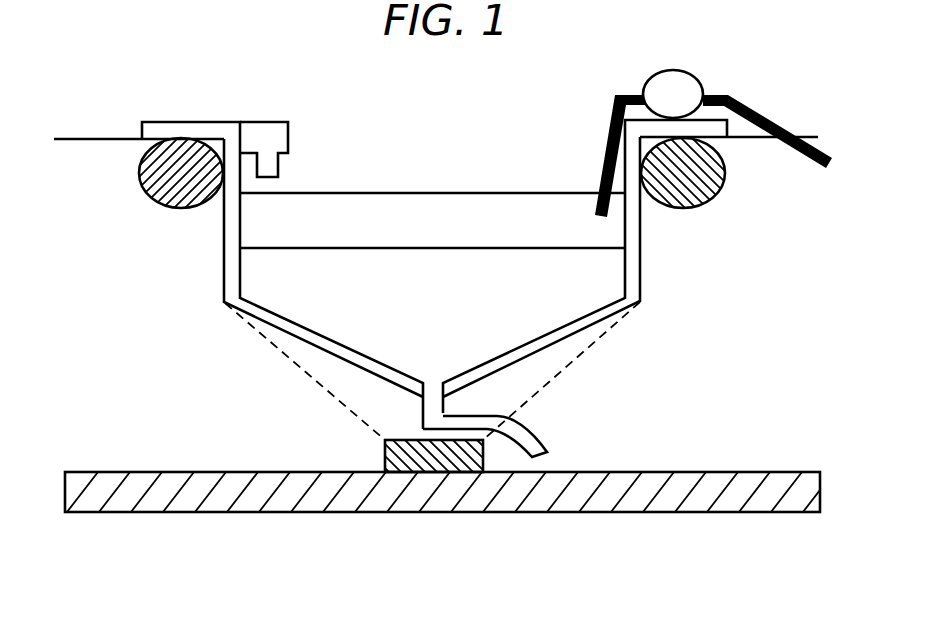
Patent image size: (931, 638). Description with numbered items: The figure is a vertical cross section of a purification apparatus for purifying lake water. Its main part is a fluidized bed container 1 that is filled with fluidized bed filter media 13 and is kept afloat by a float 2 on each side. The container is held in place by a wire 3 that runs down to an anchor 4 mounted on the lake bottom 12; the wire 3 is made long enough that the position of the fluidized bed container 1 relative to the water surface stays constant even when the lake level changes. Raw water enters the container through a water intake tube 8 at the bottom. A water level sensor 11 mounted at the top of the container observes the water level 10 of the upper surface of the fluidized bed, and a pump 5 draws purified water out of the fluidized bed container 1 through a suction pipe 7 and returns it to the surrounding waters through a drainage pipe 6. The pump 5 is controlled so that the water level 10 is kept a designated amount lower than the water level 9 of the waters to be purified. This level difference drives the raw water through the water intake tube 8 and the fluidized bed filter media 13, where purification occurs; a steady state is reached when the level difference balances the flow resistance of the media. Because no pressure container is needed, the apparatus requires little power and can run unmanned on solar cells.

The fluidized bed container 1 is at (643, 267).
The float 2 is at (143, 188).
The wire 3 is at (573, 360).
The anchor 4 is at (383, 463).
The pump 5 is at (703, 77).
The drainage pipe 6 is at (787, 123).
The suction pipe 7 is at (607, 138).
The water intake tube 8 is at (547, 445).
The water level of the waters to be purified 9 is at (98, 139).
The water level of the upper surface of the fluidized bed 10 is at (362, 200).
The water level sensor 11 is at (280, 135).
The lake bottom 12 is at (700, 471).
The fluidized bed filter media 13 is at (402, 256).